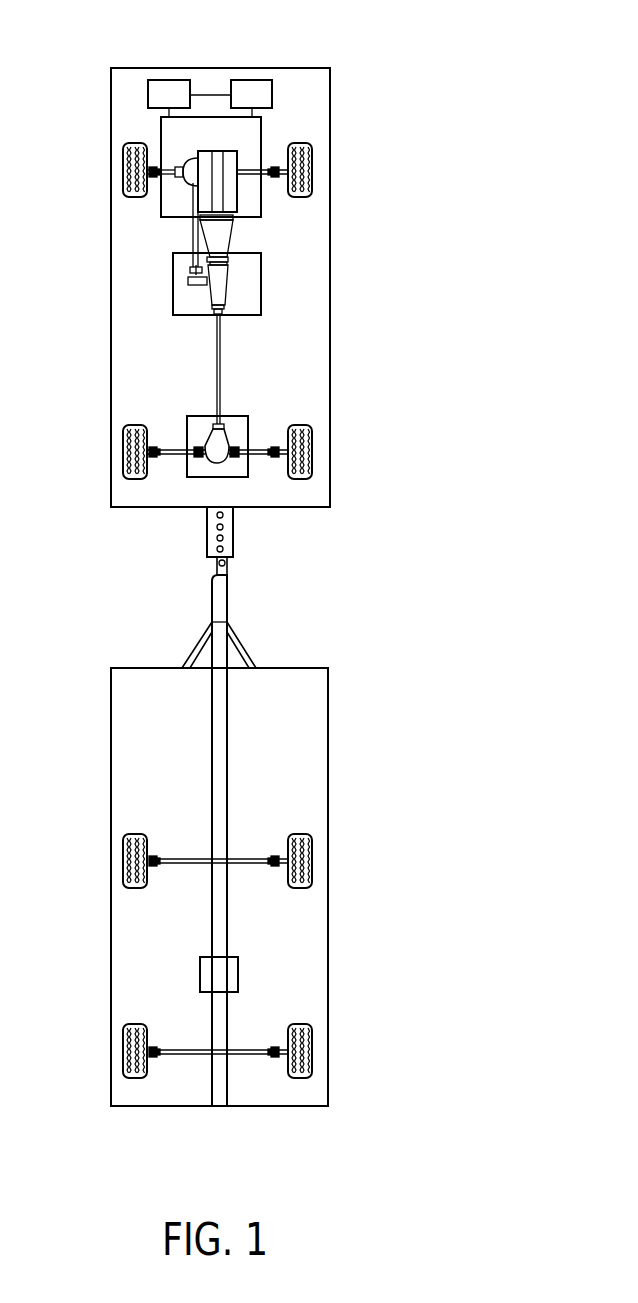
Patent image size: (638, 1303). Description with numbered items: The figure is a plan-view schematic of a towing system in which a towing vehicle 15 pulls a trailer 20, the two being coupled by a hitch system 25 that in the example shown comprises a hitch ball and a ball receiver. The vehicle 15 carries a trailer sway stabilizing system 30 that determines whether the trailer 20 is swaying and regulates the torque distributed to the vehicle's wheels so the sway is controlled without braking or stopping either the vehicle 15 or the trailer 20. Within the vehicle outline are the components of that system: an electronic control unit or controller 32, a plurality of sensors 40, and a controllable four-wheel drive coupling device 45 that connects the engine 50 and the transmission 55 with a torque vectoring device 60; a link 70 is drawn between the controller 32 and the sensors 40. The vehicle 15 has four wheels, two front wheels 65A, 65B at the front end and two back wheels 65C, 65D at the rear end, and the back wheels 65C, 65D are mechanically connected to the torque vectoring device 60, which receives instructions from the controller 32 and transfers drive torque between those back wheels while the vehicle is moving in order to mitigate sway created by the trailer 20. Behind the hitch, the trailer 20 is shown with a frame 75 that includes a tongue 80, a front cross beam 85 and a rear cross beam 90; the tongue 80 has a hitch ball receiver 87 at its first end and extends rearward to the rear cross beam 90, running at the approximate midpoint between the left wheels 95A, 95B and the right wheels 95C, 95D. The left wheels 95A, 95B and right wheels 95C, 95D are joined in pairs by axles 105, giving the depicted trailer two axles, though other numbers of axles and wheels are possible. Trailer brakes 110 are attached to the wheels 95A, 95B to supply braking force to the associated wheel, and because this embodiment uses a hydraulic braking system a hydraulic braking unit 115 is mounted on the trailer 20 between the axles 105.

The towing vehicle 15 is at (331, 300).
The trailer 20 is at (328, 786).
The hitch system 25 is at (228, 570).
The trailer sway stabilizing system 30 is at (183, 63).
The electronic control unit 32 is at (148, 92).
The sensors 40 is at (272, 92).
The controllable four-wheel drive coupling device 45 is at (218, 292).
The engine 50 is at (231, 165).
The transmission 55 is at (220, 242).
The torque vectoring device 60 is at (220, 450).
The front wheel 65A is at (124, 176).
The front wheel 65B is at (312, 185).
The back wheel 65C is at (124, 457).
The back wheel 65D is at (313, 451).
The communication link 70 is at (205, 95).
The frame 75 is at (247, 648).
The tongue 80 is at (228, 750).
The front cross beam 85 is at (128, 668).
The hitch ball receiver 87 is at (212, 582).
The rear cross beam 90 is at (278, 1106).
The left wheel 95A is at (124, 862).
The left wheel 95B is at (124, 1052).
The right wheel 95C is at (313, 870).
The right wheel 95D is at (313, 1050).
The axles 105 is at (176, 866).
The trailer brakes 110 is at (160, 1046).
The hydraulic braking unit 115 is at (240, 977).